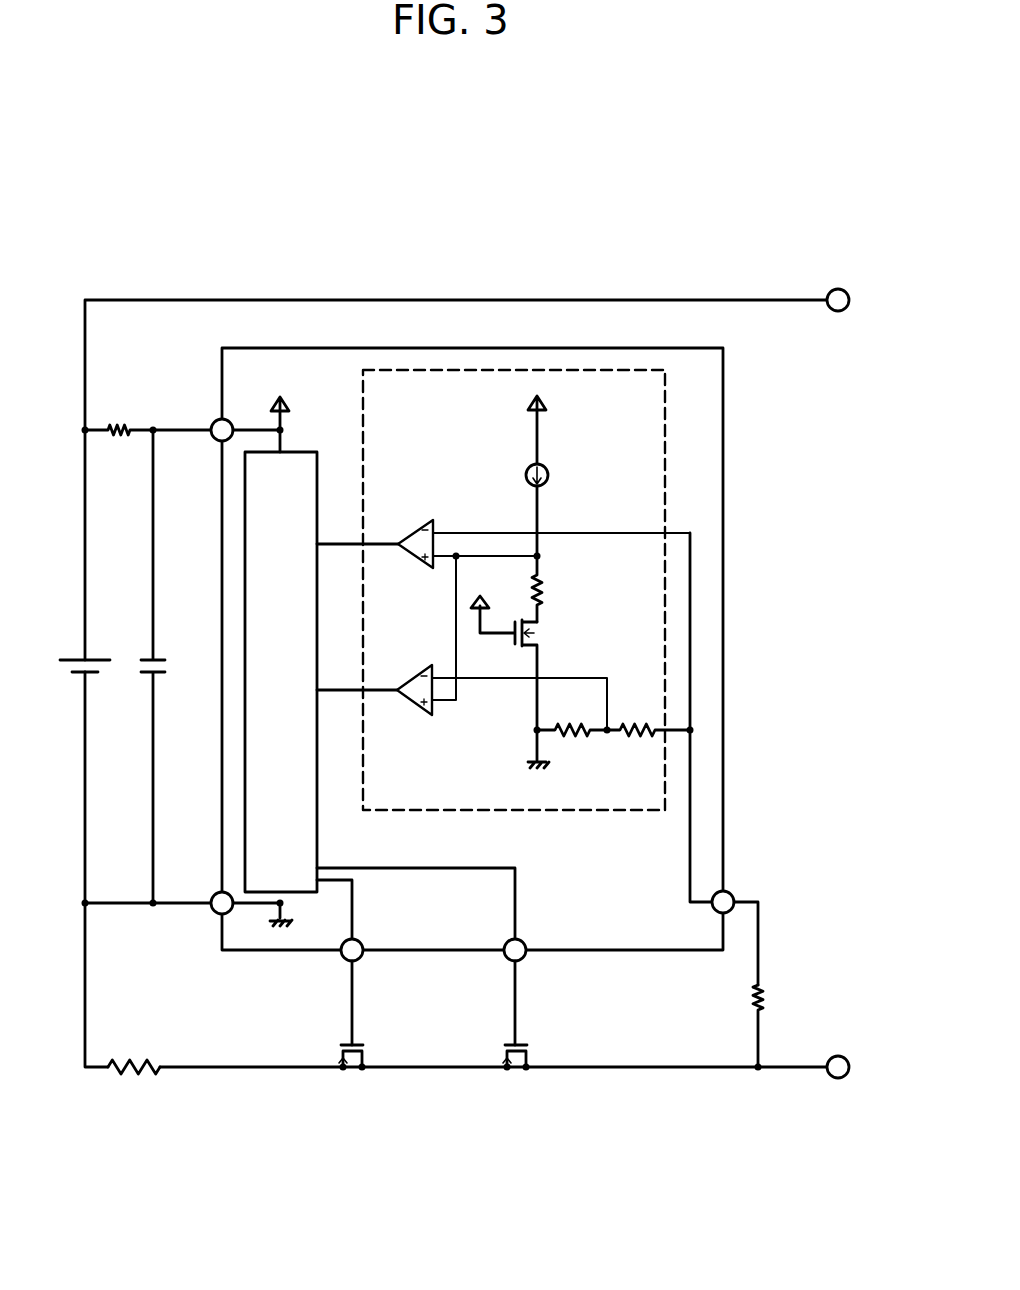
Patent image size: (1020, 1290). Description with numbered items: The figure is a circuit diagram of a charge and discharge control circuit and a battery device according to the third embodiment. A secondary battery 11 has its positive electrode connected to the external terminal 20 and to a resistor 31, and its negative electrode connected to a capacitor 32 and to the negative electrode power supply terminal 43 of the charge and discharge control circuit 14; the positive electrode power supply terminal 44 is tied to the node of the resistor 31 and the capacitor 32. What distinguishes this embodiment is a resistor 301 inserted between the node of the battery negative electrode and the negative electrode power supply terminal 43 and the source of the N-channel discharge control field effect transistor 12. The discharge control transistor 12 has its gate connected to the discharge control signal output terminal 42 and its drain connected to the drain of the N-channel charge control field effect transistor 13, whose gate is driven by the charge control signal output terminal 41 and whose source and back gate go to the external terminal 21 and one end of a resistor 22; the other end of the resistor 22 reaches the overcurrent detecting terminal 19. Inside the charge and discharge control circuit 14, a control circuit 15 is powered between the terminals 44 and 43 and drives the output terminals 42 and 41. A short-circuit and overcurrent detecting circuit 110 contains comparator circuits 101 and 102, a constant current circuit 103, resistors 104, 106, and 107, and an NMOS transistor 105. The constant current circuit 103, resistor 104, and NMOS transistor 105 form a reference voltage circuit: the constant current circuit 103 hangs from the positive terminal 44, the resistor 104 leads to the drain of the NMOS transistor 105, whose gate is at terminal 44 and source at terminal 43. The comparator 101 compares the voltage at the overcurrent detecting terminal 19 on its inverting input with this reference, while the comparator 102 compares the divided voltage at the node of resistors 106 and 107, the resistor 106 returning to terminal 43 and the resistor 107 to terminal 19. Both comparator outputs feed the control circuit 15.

The secondary battery 11 is at (100, 648).
The N-channel discharge control field effect transistor 12 is at (368, 1032).
The N-channel charge control field effect transistor 13 is at (528, 1032).
The charge and discharge control circuit 14 is at (724, 356).
The control circuit 15 is at (313, 452).
The overcurrent detecting terminal 19 is at (736, 880).
The external terminal 20 is at (840, 286).
The external terminal 21 is at (843, 1050).
The resistor 22 is at (776, 986).
The resistor 31 is at (120, 440).
The capacitor 32 is at (142, 684).
The charge control signal output terminal 41 is at (528, 936).
The discharge control signal output terminal 42 is at (368, 936).
The negative electrode power supply terminal 43 is at (210, 917).
The positive electrode power supply terminal 44 is at (214, 418).
The comparator circuit 101 is at (422, 526).
The comparator circuit 102 is at (422, 670).
The constant current circuit 103 is at (560, 482).
The resistor 104 is at (558, 594).
The NMOS transistor 105 is at (554, 634).
The resistor 106 is at (574, 745).
The resistor 107 is at (640, 745).
The short-circuit and overcurrent detecting circuit 110 is at (572, 812).
The resistor 301 is at (132, 1080).